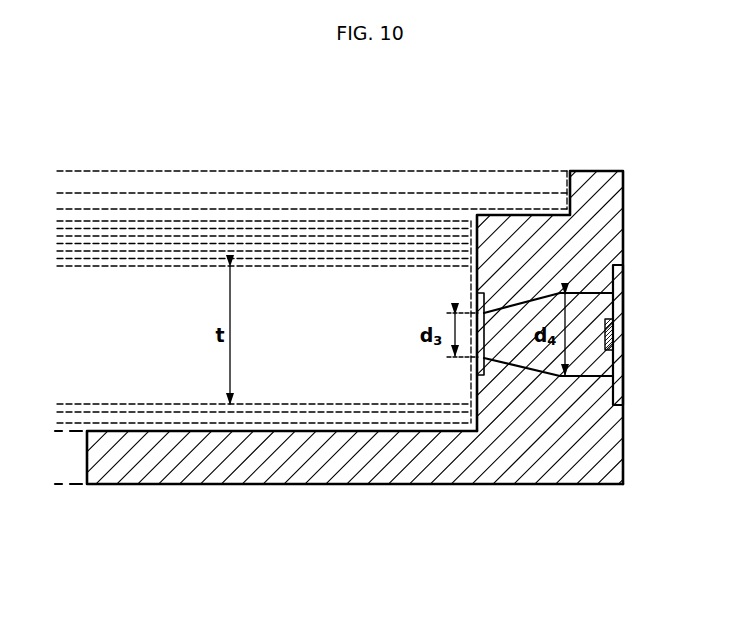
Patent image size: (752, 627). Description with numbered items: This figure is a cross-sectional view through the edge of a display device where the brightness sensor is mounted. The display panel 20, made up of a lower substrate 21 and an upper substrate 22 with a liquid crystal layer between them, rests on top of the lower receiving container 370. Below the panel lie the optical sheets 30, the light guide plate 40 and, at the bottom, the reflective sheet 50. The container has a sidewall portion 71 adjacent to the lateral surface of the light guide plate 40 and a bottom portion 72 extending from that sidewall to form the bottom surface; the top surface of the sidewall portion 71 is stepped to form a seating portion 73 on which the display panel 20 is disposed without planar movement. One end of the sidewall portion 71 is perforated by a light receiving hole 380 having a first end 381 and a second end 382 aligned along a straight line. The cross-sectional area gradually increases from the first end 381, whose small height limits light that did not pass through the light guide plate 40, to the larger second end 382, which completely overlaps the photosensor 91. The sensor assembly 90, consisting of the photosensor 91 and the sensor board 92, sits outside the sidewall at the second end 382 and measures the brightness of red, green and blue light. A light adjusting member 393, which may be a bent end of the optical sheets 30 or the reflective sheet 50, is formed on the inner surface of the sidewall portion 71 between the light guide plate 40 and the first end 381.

The display panel 20 is at (192, 112).
The lower substrate 21 is at (223, 201).
The upper substrate 22 is at (189, 181).
The optical sheets 30 is at (48, 222).
The light guide plate 40 is at (303, 280).
The reflective sheet 50 is at (197, 418).
The lower receiving container 370 is at (435, 112).
The sidewall portion 71 is at (508, 258).
The bottom portion 72 is at (367, 460).
The seating portion 73 is at (522, 215).
The light receiving hole 380 is at (548, 441).
The first end 381 is at (493, 336).
The second end 382 is at (583, 362).
The light adjusting member 393 is at (486, 297).
The sensor assembly 90 is at (666, 335).
The photosensor 91 is at (606, 330).
The sensor board 92 is at (614, 292).